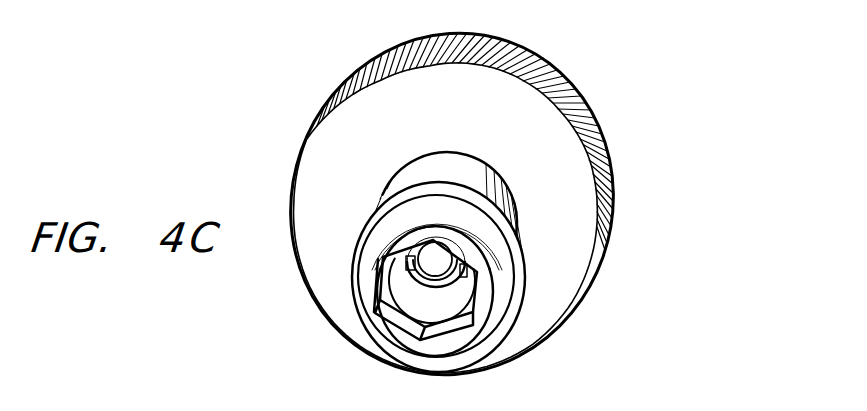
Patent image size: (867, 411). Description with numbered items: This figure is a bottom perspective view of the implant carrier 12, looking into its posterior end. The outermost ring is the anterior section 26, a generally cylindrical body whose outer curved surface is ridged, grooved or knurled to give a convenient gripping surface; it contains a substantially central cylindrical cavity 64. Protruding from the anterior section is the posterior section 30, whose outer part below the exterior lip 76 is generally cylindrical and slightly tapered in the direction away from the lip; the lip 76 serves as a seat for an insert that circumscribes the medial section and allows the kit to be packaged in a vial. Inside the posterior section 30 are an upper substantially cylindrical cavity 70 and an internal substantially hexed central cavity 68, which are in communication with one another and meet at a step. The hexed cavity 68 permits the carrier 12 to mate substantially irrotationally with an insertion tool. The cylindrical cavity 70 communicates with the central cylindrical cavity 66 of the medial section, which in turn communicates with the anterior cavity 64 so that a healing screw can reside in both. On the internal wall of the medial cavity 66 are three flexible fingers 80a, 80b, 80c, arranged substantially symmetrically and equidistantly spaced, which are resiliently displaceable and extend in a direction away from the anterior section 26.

The implant carrier 12 is at (630, 26).
The anterior section 26 is at (568, 139).
The exterior lip 76 is at (503, 208).
The posterior section 30 is at (503, 307).
The cylindrical cavity 64 is at (433, 257).
The finger 80a is at (400, 253).
The finger 80b is at (478, 272).
The finger 80c is at (380, 300).
The hexed central cavity 68 is at (400, 320).
The cylindrical cavity 70 is at (437, 302).
The cylindrical cavity 66 is at (442, 275).